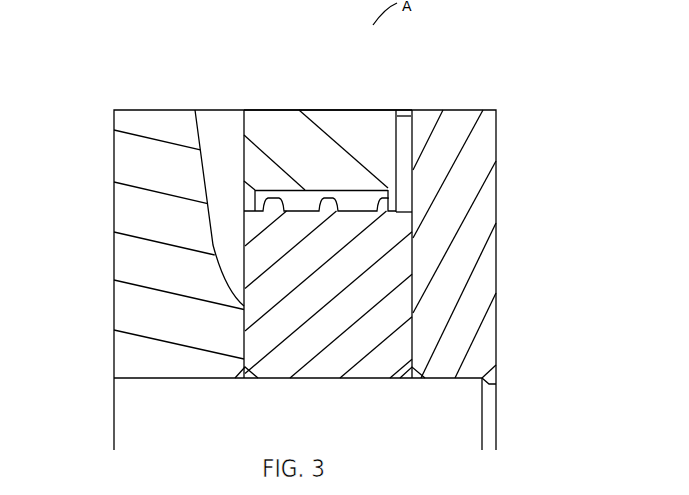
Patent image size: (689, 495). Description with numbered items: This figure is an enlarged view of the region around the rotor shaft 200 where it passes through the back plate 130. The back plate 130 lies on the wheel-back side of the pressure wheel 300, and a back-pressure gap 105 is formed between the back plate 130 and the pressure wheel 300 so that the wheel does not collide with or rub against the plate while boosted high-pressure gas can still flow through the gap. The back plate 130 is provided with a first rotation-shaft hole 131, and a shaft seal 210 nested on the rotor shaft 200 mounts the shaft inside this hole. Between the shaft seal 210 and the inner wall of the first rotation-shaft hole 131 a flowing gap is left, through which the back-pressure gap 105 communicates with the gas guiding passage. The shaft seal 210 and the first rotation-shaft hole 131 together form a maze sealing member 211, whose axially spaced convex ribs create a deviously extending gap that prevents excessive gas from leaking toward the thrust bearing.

The back-pressure gap 105 is at (228, 137).
The back plate 130 is at (365, 132).
The first rotation-shaft hole 131 is at (352, 200).
The rotor shaft 200 is at (142, 405).
The shaft seal 210 is at (362, 260).
The maze sealing member 211 is at (335, 207).
The pressure wheel 300 is at (150, 155).